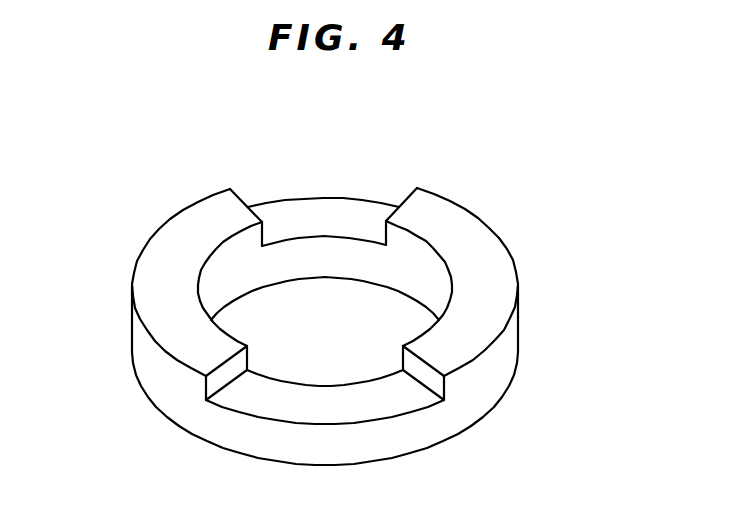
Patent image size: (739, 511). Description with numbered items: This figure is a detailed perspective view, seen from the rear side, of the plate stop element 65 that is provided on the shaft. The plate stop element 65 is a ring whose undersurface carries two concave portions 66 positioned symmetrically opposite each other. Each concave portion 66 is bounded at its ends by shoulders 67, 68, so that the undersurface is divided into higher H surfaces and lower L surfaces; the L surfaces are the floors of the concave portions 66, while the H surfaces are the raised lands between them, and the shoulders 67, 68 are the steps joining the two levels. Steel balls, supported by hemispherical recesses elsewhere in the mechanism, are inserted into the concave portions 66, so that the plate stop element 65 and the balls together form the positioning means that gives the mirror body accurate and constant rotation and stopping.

The plate stop element 65 is at (299, 297).
The concave portions 66 is at (306, 200).
The shoulder 67 is at (261, 211).
The shoulder 68 is at (405, 200).
The H surface H is at (455, 222).
The L surface L is at (335, 215).